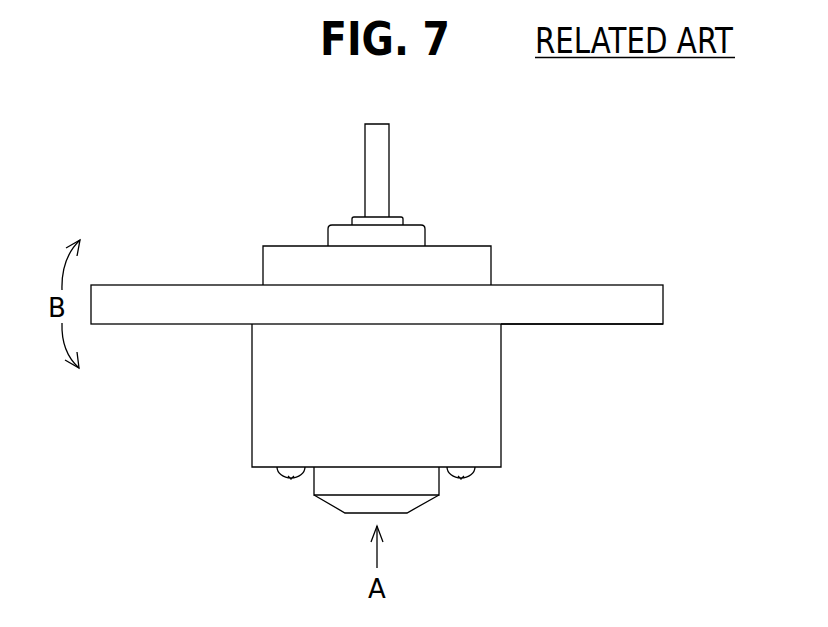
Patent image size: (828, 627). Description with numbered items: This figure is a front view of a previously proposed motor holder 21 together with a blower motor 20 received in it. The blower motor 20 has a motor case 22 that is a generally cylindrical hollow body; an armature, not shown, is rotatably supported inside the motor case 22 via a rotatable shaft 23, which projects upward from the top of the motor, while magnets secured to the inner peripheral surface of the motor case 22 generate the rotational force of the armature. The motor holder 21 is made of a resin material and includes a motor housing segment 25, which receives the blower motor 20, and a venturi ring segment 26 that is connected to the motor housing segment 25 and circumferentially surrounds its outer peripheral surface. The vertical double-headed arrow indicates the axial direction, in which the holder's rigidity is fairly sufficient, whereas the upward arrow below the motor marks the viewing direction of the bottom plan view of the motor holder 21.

The blower motor 20 is at (418, 318).
The motor holder 21 is at (663, 305).
The motor case 22 is at (491, 258).
The rotatable shaft 23 is at (383, 158).
The motor housing segment 25 is at (501, 393).
The venturi ring segment 26 is at (608, 313).